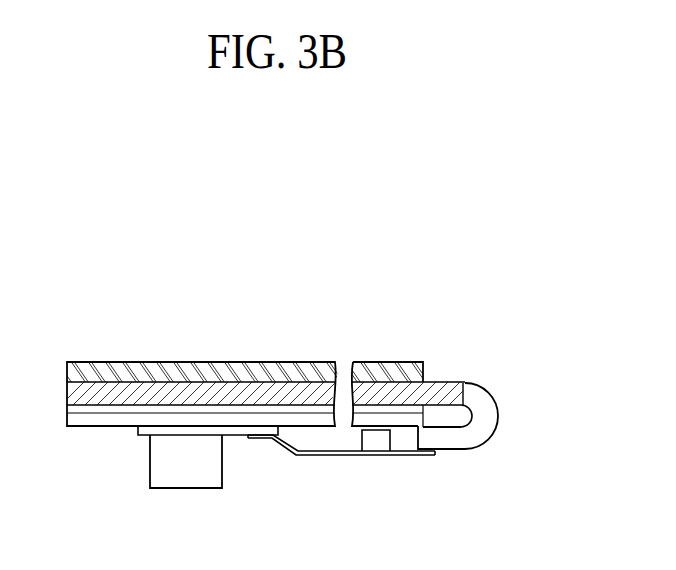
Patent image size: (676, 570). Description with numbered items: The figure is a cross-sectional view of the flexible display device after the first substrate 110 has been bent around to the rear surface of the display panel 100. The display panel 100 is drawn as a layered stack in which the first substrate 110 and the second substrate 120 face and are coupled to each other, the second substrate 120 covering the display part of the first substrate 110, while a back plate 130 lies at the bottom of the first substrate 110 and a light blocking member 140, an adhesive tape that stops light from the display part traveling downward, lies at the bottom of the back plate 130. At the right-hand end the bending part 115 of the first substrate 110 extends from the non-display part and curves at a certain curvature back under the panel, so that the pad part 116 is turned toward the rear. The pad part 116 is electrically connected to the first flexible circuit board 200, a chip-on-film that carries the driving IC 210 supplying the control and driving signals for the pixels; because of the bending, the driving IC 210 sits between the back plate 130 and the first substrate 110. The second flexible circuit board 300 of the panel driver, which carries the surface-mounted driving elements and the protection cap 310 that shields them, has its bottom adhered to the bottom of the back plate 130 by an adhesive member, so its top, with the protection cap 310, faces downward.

The display panel 100 is at (153, 305).
The first substrate 110 is at (152, 393).
The bending part 115 is at (498, 406).
The pad part 116 is at (424, 455).
The second substrate 120 is at (202, 374).
The back plate 130 is at (246, 408).
The light blocking member 140 is at (106, 419).
The first flexible circuit board 200 is at (323, 454).
The driving IC 210 is at (376, 443).
The second flexible circuit board 300 is at (148, 428).
The protection cap 310 is at (186, 475).